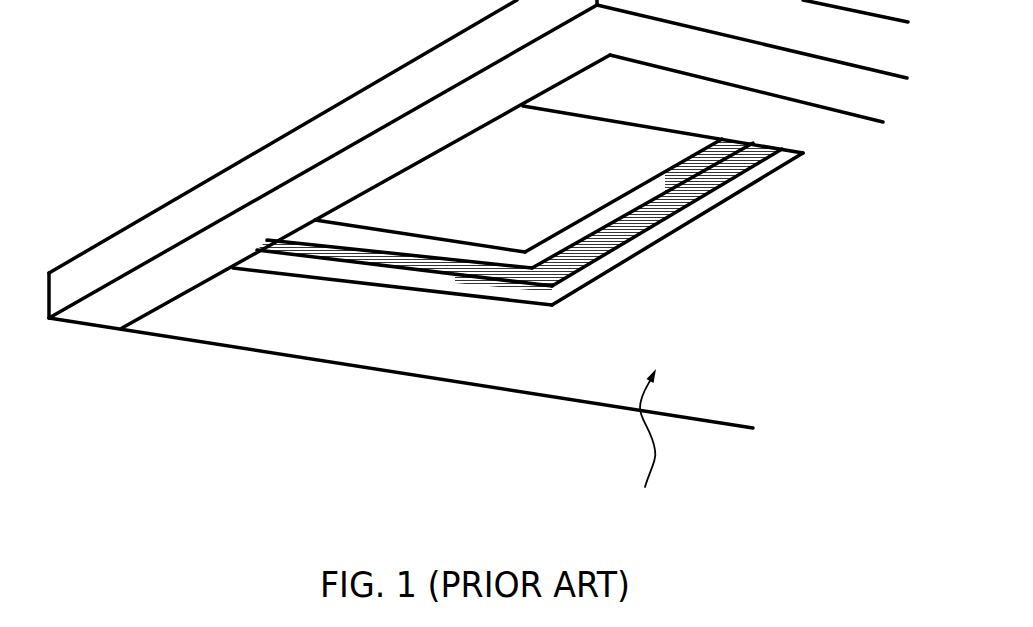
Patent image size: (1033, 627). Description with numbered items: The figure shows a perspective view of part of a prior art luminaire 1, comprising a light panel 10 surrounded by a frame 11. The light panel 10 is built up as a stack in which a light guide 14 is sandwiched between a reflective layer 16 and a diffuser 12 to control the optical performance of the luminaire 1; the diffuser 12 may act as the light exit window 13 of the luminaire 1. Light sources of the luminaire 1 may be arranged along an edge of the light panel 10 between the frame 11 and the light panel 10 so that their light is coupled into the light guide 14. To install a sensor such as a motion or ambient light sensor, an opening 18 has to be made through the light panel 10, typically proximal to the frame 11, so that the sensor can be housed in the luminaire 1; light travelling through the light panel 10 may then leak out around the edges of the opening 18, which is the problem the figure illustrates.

The luminaire 1 is at (447, 512).
The light panel 10 is at (267, 330).
The frame 11 is at (337, 116).
The diffuser 12 is at (612, 259).
The light exit window 13 is at (641, 448).
The light guide 14 is at (663, 209).
The reflective layer 16 is at (706, 157).
The opening 18 is at (537, 152).